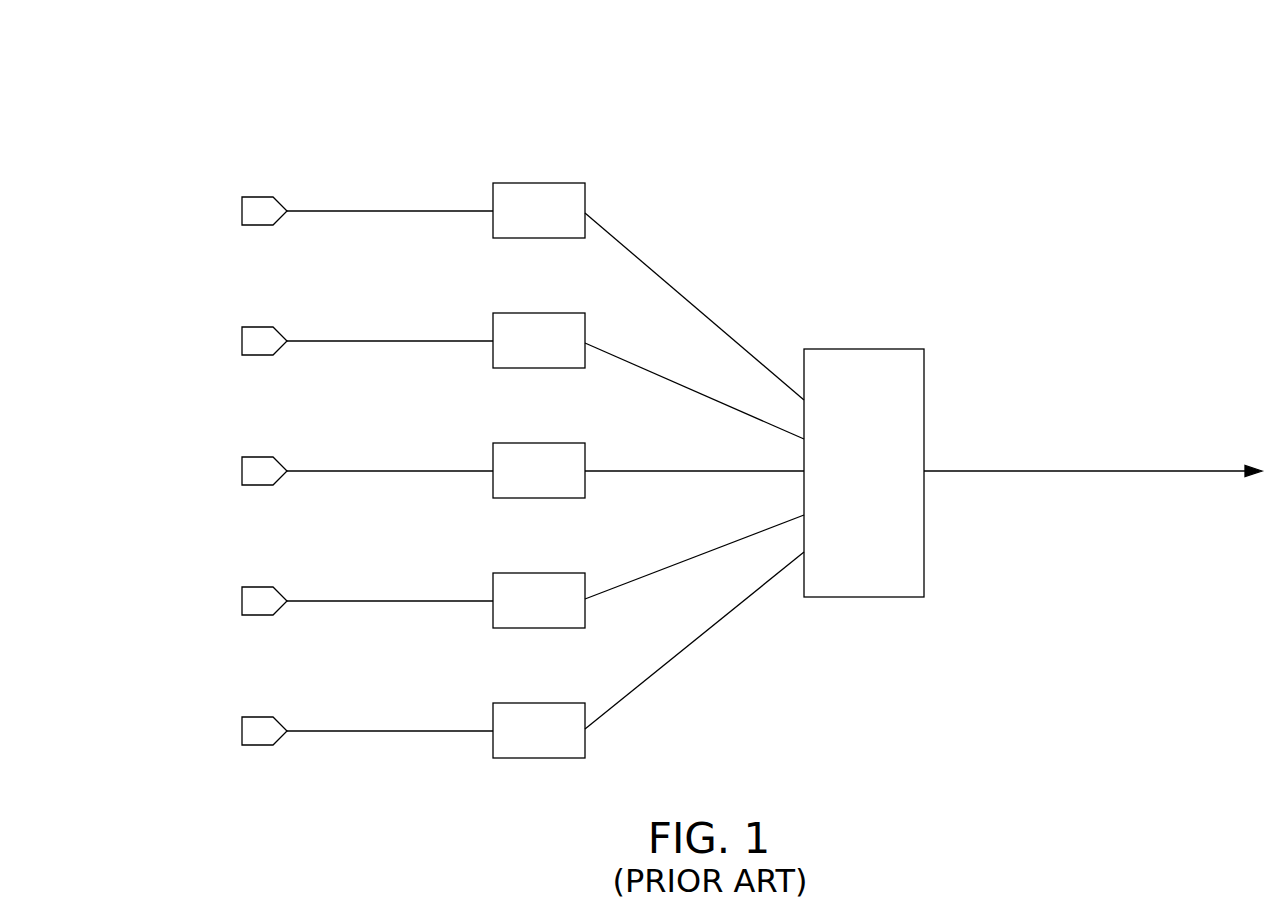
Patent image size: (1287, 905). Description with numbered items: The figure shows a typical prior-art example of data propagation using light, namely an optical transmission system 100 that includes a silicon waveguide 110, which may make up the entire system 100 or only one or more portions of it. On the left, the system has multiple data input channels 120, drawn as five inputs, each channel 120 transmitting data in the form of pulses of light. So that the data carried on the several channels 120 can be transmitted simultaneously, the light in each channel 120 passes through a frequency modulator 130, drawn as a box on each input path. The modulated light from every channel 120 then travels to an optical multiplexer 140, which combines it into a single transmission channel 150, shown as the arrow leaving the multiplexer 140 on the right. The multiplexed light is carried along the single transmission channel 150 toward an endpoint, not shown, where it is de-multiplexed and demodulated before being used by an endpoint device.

The optical transmission system 100 is at (1064, 87).
The silicon waveguide 110 is at (755, 228).
The data input channels 120 is at (240, 467).
The frequency modulator 130 is at (493, 327).
The optical multiplexer 140 is at (883, 467).
The single transmission channel 150 is at (1112, 471).